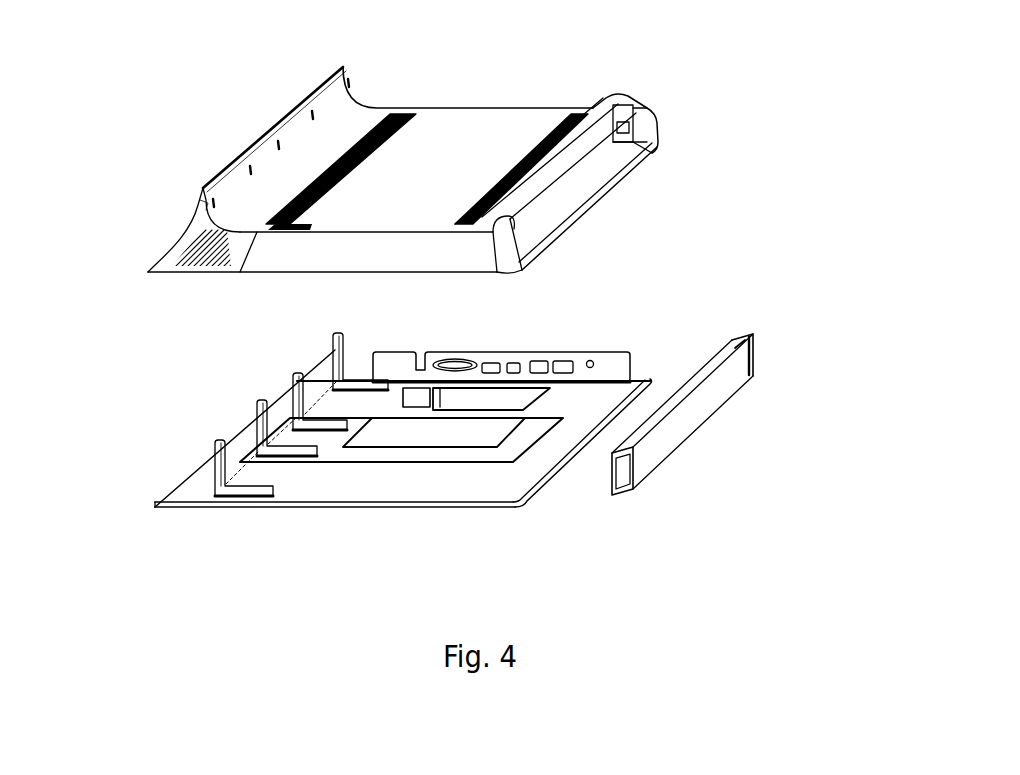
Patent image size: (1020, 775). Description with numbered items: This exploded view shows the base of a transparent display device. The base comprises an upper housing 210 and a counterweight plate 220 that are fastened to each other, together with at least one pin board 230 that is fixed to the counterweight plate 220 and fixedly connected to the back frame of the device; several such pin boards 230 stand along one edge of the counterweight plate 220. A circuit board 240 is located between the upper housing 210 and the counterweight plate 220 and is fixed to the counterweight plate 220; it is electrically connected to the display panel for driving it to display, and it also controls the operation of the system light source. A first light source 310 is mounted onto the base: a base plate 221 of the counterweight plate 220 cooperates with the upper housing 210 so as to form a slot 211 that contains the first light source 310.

The upper housing 210 is at (483, 120).
The slot 211 is at (647, 96).
The counterweight plate 220 is at (323, 483).
The base plate 221 is at (547, 460).
The pin board 230 is at (215, 464).
The circuit board 240 is at (557, 362).
The first light source 310 is at (760, 347).